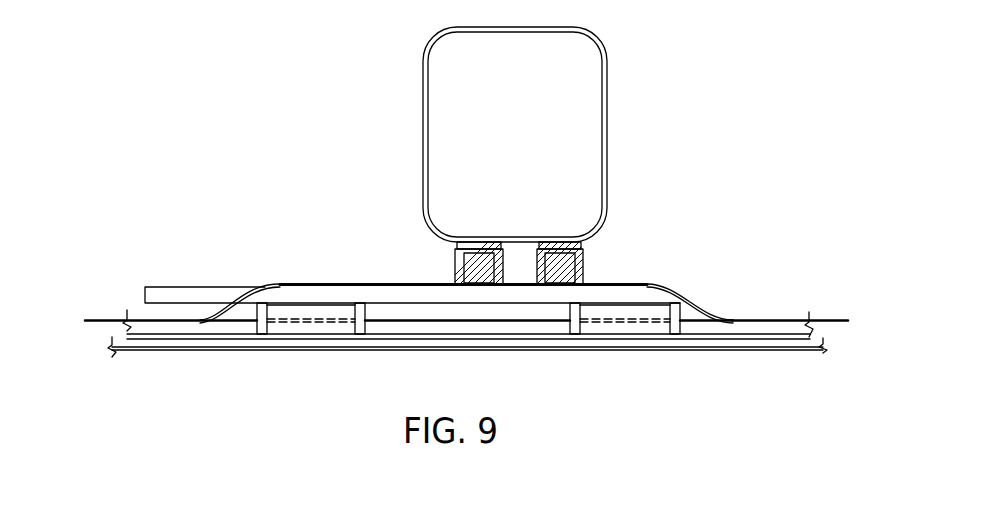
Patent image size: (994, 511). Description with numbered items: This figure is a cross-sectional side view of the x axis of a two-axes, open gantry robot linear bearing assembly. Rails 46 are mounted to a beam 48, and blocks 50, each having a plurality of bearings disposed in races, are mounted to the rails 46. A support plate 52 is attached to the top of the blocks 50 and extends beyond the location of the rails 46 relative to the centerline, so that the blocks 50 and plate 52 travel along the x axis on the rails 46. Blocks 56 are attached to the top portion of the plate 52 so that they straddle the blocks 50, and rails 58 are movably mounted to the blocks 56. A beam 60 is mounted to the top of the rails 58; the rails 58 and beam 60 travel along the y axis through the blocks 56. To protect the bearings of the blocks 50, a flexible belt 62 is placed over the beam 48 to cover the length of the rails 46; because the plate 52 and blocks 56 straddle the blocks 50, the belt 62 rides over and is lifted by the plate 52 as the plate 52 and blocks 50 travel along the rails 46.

The rails 46 is at (813, 337).
The beam 48 is at (803, 347).
The blocks 50 is at (285, 318).
The support plate 52 is at (320, 298).
The blocks 56 is at (455, 277).
The rails 58 is at (457, 243).
The beam 60 is at (531, 128).
The flexible belt 62 is at (105, 318).